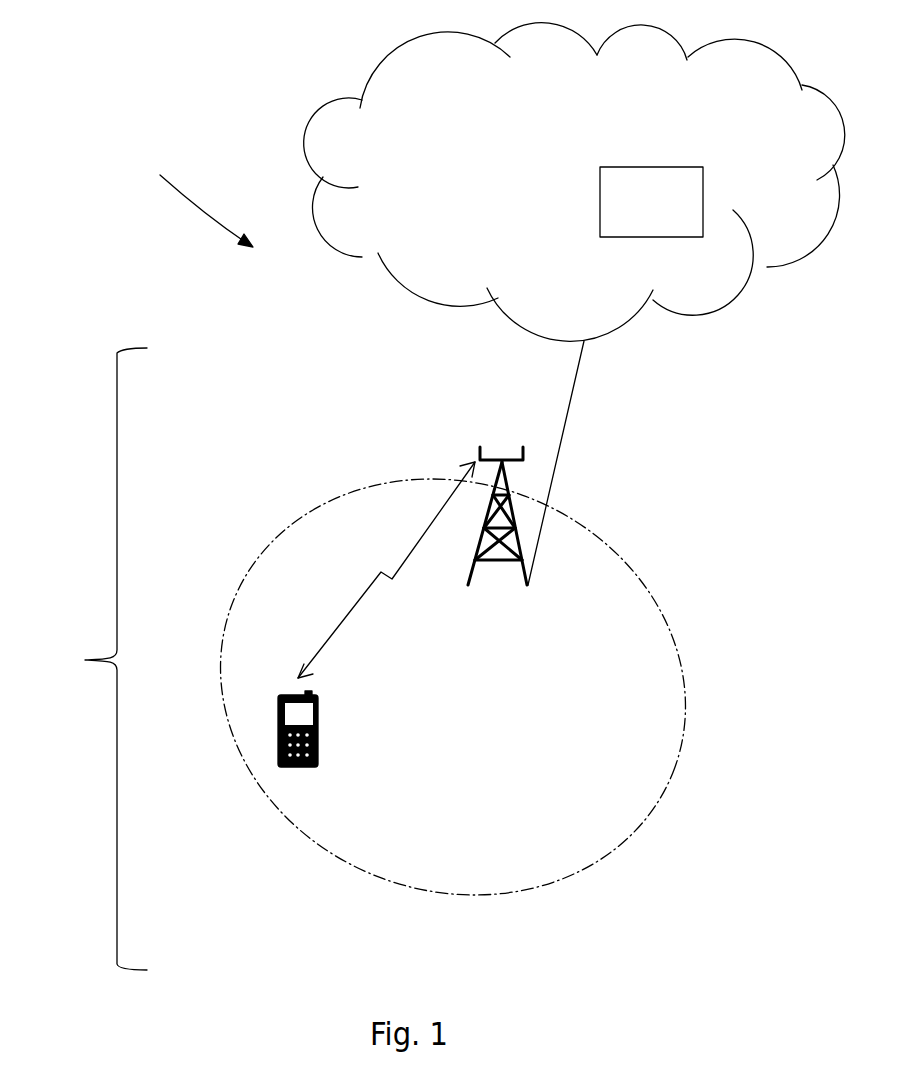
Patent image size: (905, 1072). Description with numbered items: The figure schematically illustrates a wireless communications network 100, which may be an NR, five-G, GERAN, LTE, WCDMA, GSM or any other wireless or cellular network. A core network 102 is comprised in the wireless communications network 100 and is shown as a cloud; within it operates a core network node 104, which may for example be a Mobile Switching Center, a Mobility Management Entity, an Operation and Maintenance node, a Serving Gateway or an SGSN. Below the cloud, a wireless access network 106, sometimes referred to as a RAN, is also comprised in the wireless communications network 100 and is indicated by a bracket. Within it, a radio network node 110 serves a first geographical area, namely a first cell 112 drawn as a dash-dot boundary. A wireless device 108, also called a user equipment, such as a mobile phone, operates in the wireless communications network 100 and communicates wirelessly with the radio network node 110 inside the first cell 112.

The wireless communications network 100 is at (188, 185).
The core network 102 is at (316, 117).
The core network node 104 is at (650, 167).
The wireless access network 106 is at (84, 659).
The wireless device 108 is at (318, 727).
The radio network node 110 is at (515, 492).
The first cell 112 is at (280, 530).